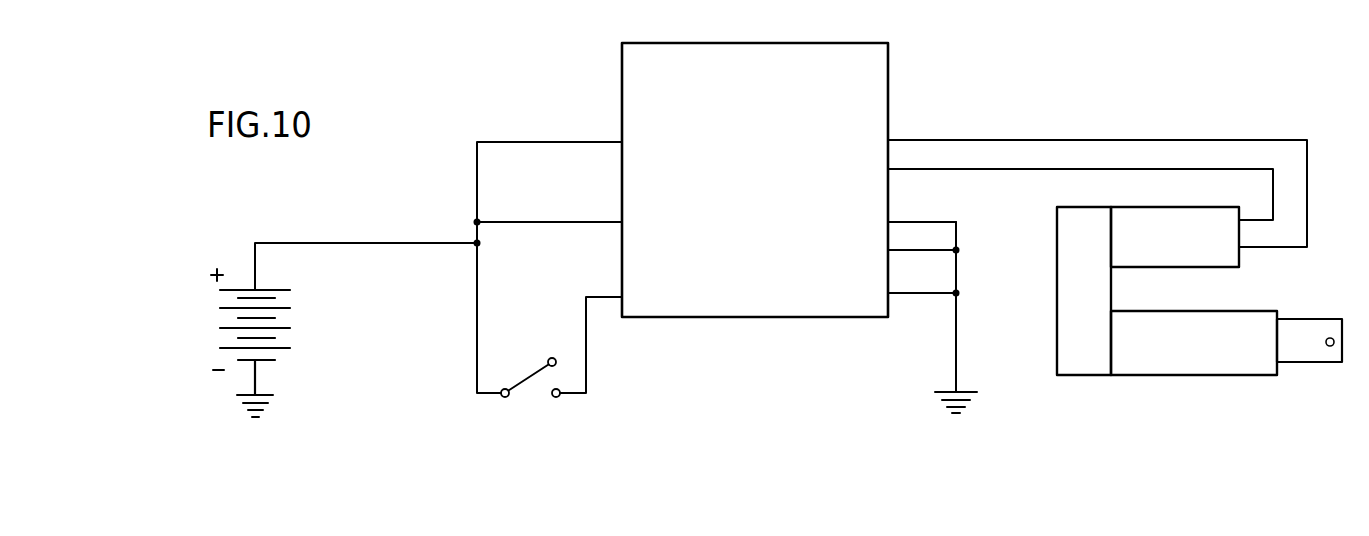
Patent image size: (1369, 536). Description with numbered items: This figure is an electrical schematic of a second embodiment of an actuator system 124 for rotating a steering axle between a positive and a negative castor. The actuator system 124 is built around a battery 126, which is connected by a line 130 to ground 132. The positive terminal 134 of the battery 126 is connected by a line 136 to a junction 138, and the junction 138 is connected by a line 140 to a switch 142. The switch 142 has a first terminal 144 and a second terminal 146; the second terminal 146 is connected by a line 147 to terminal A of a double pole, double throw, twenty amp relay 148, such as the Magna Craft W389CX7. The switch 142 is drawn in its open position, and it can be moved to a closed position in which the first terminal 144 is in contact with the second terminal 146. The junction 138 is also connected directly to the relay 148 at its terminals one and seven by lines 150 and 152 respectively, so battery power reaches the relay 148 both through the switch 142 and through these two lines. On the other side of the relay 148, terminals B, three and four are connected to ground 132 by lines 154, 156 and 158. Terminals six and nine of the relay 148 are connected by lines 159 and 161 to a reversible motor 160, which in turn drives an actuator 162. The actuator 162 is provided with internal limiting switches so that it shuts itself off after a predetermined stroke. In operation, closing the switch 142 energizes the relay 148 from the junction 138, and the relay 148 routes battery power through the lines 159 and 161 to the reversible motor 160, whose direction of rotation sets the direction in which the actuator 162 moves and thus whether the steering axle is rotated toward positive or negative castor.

The actuator system 124 is at (442, 362).
The battery 126 is at (243, 329).
The line 130 is at (258, 381).
The ground 132 is at (273, 393).
The positive terminal 134 is at (277, 289).
The line 136 is at (322, 243).
The junction 138 is at (475, 242).
The line 140 is at (477, 283).
The switch 142 is at (564, 373).
The first terminal 144 is at (550, 357).
The second terminal 146 is at (562, 396).
The line 147 is at (583, 304).
The relay 148 is at (766, 318).
The line 150 is at (518, 141).
The line 152 is at (562, 221).
The line 154 is at (923, 297).
The line 156 is at (942, 252).
The line 158 is at (941, 220).
The line 159 is at (917, 139).
The reversible motor 160 is at (1169, 213).
The line 161 is at (1023, 170).
The actuator 162 is at (1199, 290).